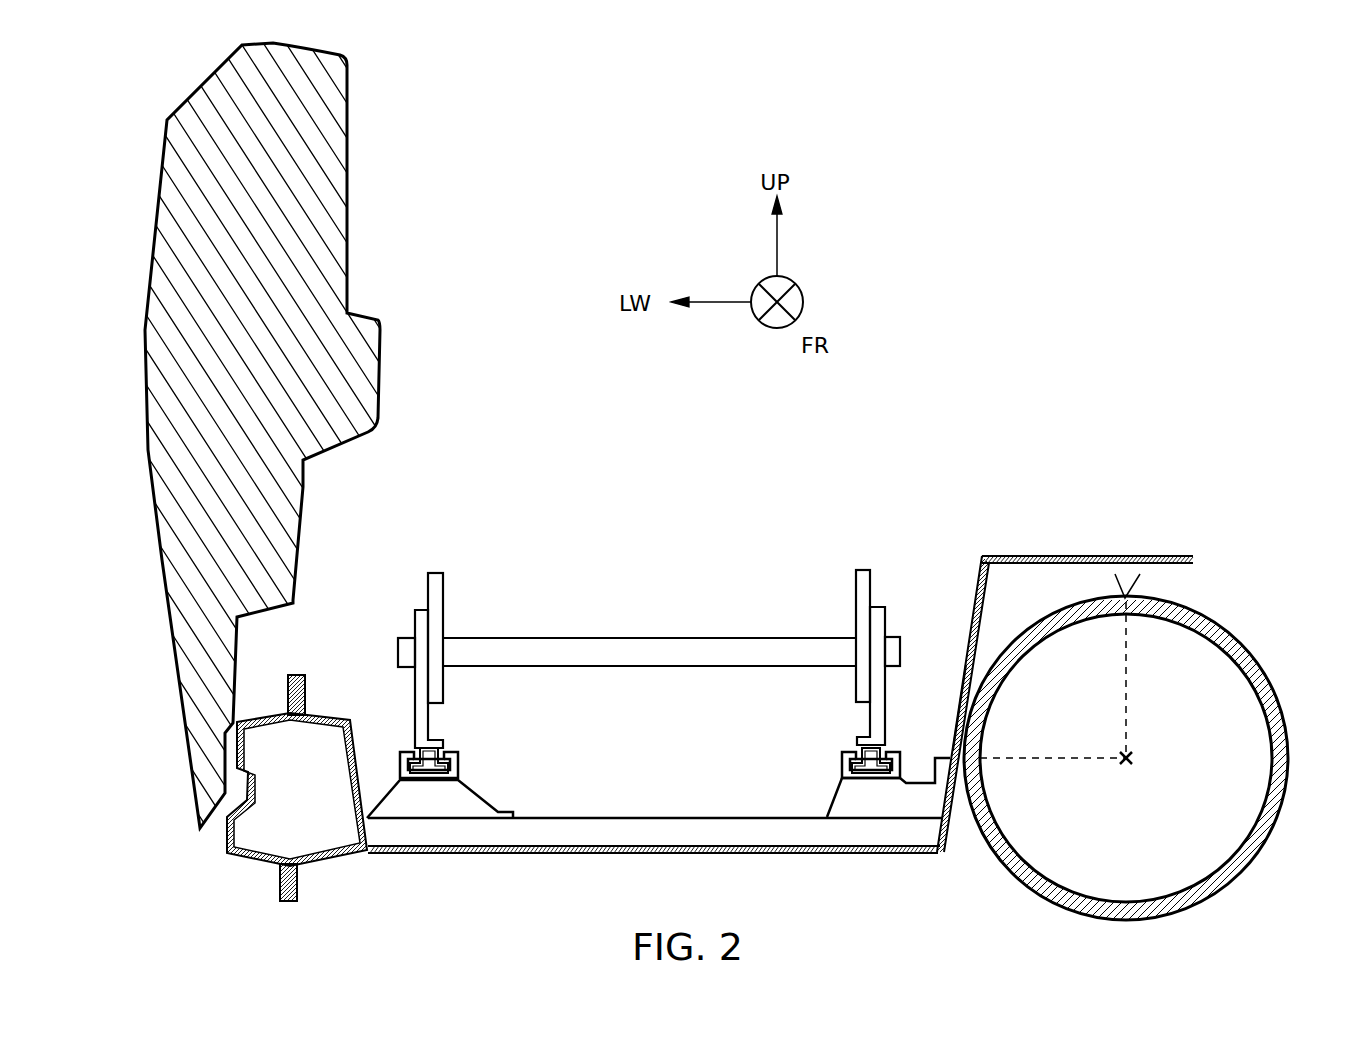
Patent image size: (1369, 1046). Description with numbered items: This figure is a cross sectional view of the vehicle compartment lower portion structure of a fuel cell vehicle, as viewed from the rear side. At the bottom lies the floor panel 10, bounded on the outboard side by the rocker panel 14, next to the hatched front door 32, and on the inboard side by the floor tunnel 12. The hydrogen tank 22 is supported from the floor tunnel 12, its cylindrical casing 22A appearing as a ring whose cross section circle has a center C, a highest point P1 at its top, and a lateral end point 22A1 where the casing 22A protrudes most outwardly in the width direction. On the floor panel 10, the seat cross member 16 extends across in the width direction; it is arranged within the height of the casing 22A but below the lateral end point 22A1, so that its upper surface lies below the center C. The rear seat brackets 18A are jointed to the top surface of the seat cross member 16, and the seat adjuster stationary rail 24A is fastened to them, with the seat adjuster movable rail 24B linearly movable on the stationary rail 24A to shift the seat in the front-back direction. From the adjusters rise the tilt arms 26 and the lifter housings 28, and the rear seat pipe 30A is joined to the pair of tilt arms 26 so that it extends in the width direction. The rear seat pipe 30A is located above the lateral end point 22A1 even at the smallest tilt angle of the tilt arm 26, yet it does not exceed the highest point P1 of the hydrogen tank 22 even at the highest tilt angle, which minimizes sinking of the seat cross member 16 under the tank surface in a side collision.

The floor panel 10 is at (653, 852).
The floor tunnel 12 is at (1029, 556).
The rocker panel 14 is at (305, 695).
The seat cross member 16 is at (648, 817).
The seat bracket 18A is at (497, 802).
The hydrogen tank 22 is at (1004, 739).
The casing 22A is at (1255, 657).
The lateral end point 22A1 is at (964, 758).
The seat adjuster stationary rail 24A is at (460, 767).
The seat adjuster movable rail 24B is at (435, 767).
The tilt arm 26 is at (413, 618).
The lifter housing 28 is at (433, 572).
The rear seat pipe 30A is at (648, 633).
The front door 32 is at (350, 248).
The highest point P1 is at (1128, 592).
The center C is at (1056, 703).